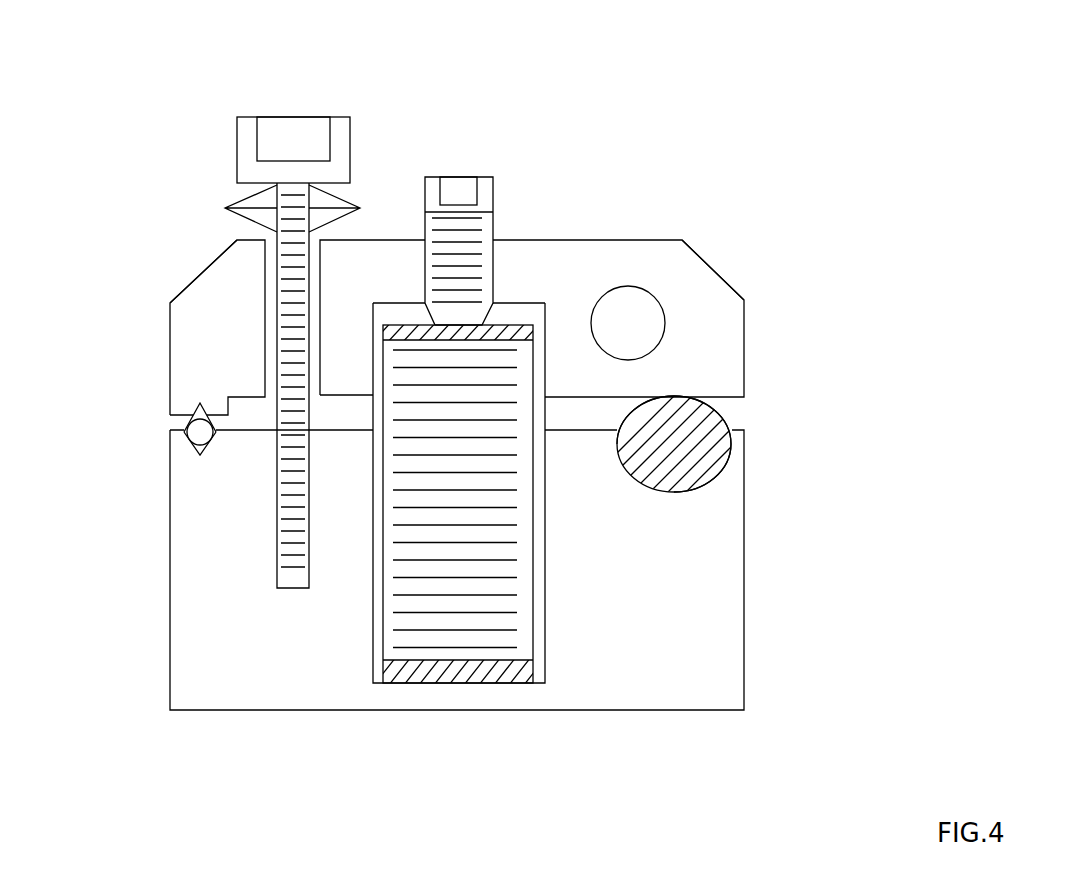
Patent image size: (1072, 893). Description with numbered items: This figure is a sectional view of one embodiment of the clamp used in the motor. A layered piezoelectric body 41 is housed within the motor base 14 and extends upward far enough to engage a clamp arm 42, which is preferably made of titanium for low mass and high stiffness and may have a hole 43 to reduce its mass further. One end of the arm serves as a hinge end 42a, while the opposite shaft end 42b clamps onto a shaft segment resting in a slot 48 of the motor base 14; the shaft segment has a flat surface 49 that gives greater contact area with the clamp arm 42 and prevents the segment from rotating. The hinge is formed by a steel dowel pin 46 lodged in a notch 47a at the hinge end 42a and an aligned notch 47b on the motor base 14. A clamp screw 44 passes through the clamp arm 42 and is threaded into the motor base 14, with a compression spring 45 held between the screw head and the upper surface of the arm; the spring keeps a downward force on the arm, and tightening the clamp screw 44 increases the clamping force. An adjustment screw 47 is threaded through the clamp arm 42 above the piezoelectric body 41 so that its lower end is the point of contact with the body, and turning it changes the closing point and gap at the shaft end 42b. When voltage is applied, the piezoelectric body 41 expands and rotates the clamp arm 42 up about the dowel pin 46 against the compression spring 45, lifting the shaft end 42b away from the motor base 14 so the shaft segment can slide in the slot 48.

The motor base 14 is at (170, 642).
The layered piezoelectric body 41 is at (492, 648).
The clamp arm 42 is at (682, 240).
The hinge end 42a is at (217, 293).
The shaft end 42b is at (707, 310).
The hole 43 is at (621, 325).
The clamp screw 44 is at (350, 137).
The compression spring 45 is at (252, 195).
The steel dowel pin 46 is at (182, 423).
The adjustment screw 47 is at (430, 178).
The notch 47a is at (200, 403).
The notch 47b is at (200, 455).
The slot 48 is at (693, 432).
The flat surface 49 is at (700, 488).